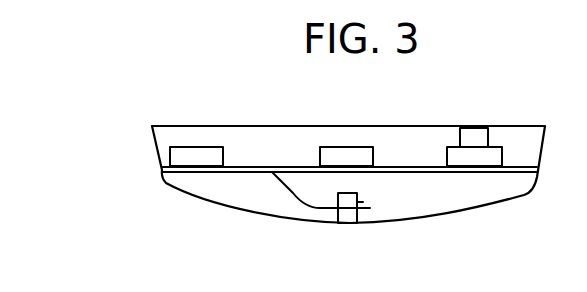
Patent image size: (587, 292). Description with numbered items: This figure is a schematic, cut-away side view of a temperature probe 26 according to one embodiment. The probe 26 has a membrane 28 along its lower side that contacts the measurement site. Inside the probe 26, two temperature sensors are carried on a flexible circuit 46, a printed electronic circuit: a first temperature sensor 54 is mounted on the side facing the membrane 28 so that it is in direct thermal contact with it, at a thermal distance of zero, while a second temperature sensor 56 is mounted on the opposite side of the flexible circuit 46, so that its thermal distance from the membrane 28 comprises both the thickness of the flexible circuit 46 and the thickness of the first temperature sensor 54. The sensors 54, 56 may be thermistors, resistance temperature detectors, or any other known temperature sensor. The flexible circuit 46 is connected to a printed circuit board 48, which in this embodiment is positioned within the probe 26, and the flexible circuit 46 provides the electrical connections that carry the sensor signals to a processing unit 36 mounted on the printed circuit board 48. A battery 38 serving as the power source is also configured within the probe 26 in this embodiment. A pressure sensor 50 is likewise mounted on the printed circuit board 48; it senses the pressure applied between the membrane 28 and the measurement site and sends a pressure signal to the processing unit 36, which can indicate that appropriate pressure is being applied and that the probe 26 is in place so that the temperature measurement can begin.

The probe 26 is at (125, 79).
The membrane 28 is at (222, 210).
The processing unit 36 is at (203, 153).
The battery 38 is at (362, 148).
The flexible circuit 46 is at (293, 200).
The printed circuit board 48 is at (518, 173).
The pressure sensor 50 is at (492, 158).
The first temperature sensor 54 is at (352, 223).
The second temperature sensor 56 is at (358, 202).